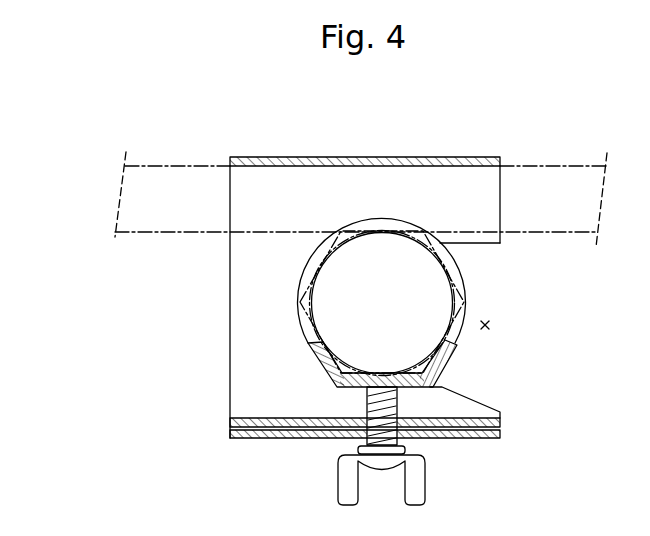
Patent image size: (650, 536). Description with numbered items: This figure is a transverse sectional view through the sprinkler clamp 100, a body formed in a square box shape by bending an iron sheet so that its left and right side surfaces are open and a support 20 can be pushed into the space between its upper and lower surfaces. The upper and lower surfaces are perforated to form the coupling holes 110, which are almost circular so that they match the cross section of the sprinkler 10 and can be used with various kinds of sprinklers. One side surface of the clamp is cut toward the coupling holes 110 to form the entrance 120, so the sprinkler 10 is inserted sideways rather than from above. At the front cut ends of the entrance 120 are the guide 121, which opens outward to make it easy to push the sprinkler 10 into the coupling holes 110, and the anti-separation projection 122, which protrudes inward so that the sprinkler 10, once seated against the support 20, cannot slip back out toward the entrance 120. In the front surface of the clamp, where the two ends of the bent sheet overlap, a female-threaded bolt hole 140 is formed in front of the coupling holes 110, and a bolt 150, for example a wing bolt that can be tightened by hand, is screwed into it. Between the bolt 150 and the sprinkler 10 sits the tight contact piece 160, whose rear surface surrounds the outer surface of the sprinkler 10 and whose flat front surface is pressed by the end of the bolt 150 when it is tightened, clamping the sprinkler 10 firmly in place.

The sprinkler 10 is at (325, 285).
The support 20 is at (558, 178).
The sprinkler clamp 100 is at (265, 152).
The coupling holes 110 is at (363, 222).
The entrance 120 is at (485, 325).
The guide 121 is at (480, 397).
The anti-separation projection 122 is at (480, 245).
The bolt hole 140 is at (367, 423).
The bolt 150 is at (418, 478).
The tight contact piece 160 is at (327, 367).